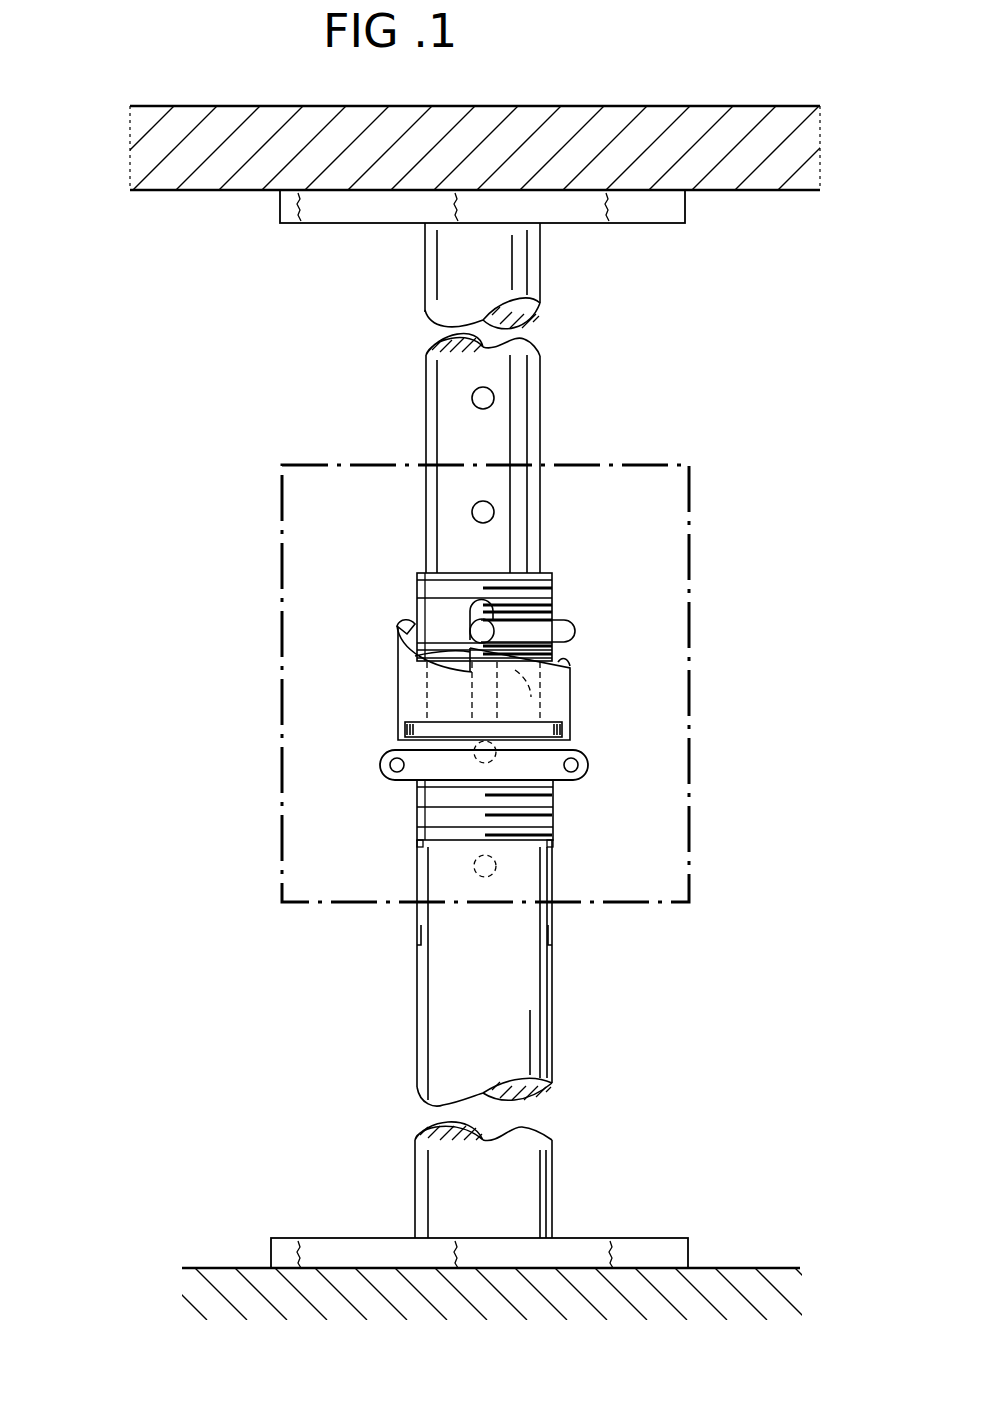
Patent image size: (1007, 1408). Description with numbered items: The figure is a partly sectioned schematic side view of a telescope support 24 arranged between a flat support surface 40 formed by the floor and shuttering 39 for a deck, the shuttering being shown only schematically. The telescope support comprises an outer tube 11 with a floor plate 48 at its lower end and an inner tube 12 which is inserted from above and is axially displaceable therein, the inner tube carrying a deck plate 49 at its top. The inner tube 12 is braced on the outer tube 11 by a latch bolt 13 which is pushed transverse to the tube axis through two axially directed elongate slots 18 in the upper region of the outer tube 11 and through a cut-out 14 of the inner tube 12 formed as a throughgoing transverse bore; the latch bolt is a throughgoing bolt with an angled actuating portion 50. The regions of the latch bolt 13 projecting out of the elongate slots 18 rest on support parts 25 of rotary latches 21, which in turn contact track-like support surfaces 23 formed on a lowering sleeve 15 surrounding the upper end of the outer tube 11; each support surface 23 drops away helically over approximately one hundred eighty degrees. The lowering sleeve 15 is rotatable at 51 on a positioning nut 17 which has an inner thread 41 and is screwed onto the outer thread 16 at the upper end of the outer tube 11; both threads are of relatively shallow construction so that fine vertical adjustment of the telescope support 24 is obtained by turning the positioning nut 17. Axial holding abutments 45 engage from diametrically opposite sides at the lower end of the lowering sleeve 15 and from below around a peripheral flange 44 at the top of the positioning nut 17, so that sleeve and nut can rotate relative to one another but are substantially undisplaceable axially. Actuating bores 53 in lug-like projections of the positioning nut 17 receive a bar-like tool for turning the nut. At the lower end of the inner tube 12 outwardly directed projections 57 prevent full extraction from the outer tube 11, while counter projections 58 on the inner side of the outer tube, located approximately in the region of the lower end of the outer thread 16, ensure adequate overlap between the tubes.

The outer tube 11 is at (492, 1039).
The inner tube 12 is at (522, 448).
The latch bolt 13 is at (470, 623).
The cut-out 14 is at (472, 400).
The lowering sleeve 15 is at (495, 671).
The outer thread 16 is at (510, 595).
The positioning nut 17 is at (550, 783).
The elongate slots 18 is at (528, 604).
The rotary latches 21 is at (526, 693).
The support surfaces 23 is at (396, 628).
The telescope support 24 is at (356, 582).
The support parts 25 is at (430, 660).
The shuttering 39 is at (690, 106).
The support surface 40 is at (770, 1268).
The inner thread 41 is at (384, 752).
The peripheral flange 44 is at (405, 729).
The axial holding abutments 45 is at (562, 737).
The floor plate 48 is at (334, 1246).
The deck plate 49 is at (620, 216).
The angled actuating portion 50 is at (573, 622).
The rotary surface 51 is at (491, 707).
The actuating bores 53 is at (502, 769).
The outwardly directed projections 57 is at (416, 944).
The counter projections 58 is at (416, 843).